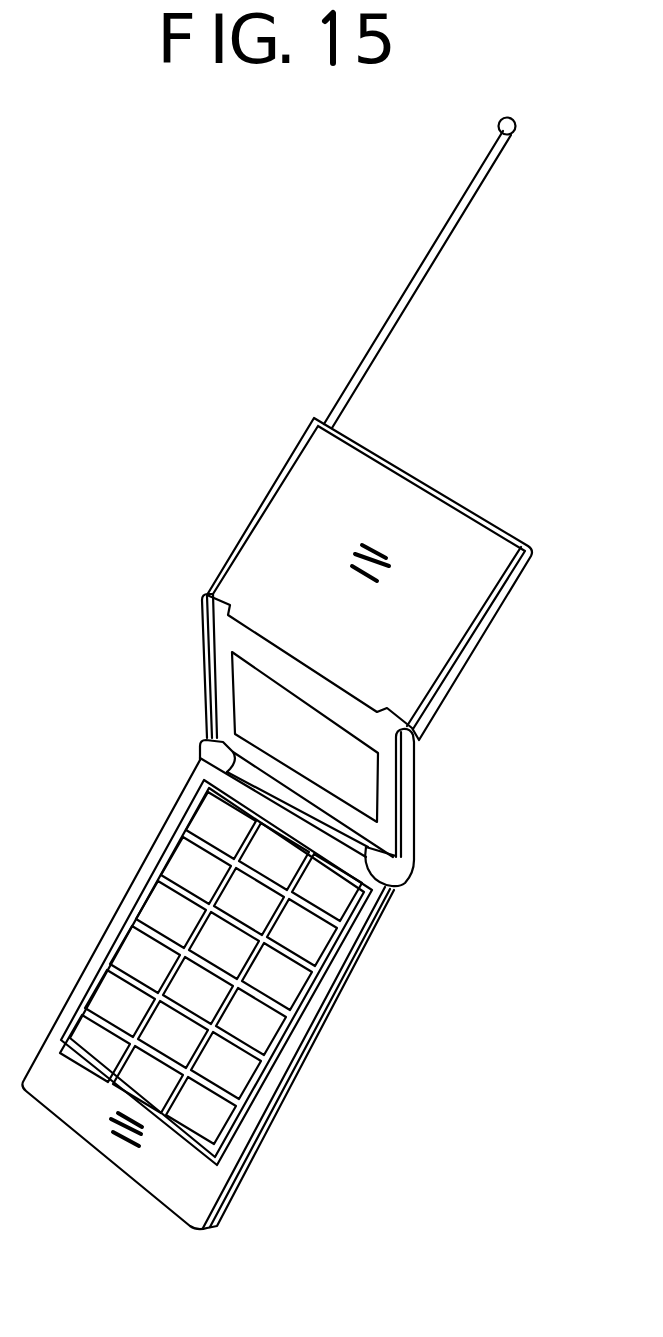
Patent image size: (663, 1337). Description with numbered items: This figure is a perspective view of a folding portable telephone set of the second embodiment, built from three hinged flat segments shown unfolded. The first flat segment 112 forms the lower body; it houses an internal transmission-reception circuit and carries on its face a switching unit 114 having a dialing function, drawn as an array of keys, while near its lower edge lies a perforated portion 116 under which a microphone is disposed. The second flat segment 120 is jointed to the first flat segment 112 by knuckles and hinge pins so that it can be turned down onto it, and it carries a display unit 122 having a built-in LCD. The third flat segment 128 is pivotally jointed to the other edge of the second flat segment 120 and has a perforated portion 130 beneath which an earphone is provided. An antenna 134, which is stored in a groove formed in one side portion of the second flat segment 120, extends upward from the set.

The first flat segment 112 is at (303, 1023).
The switching unit 114 is at (173, 862).
The perforated portion 116 is at (111, 1118).
The second flat segment 120 is at (390, 772).
The display unit 122 is at (257, 704).
The third flat segment 128 is at (417, 503).
The perforated portion 130 is at (391, 568).
The antenna 134 is at (414, 272).